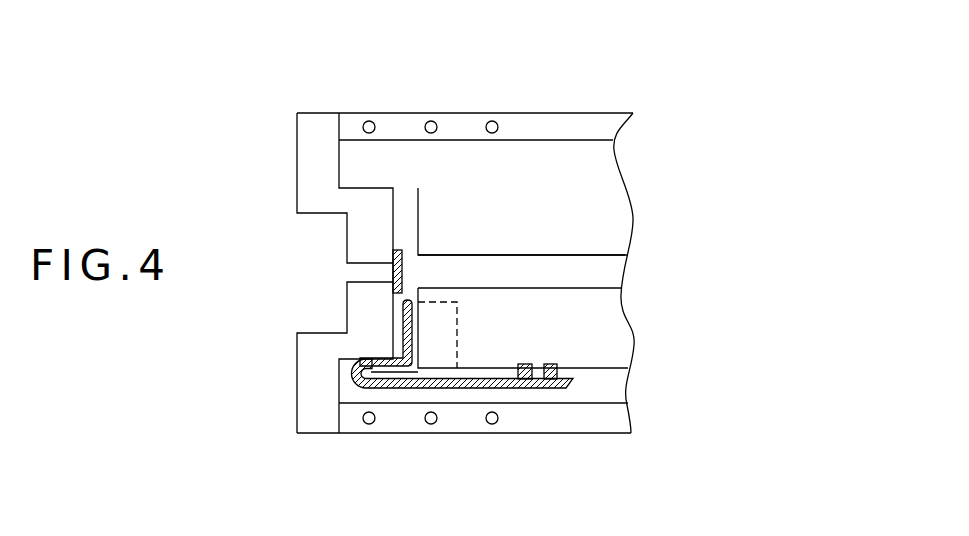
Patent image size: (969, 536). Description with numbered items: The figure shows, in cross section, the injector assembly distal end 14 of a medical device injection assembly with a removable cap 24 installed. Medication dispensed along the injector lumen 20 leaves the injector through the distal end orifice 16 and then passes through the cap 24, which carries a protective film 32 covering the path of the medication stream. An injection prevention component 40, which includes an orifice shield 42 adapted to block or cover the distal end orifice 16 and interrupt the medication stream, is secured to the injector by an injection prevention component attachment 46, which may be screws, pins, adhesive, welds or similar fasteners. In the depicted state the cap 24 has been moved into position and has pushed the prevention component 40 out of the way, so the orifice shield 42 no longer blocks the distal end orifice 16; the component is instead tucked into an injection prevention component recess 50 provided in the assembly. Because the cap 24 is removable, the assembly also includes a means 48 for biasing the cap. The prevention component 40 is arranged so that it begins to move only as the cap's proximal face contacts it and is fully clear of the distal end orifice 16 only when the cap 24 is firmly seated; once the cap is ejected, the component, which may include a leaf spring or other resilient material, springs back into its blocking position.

The injector assembly distal end 14 is at (313, 452).
The distal end orifice 16 is at (427, 273).
The injector lumen 20 is at (568, 273).
The cap 24 is at (313, 401).
The film 32 is at (395, 269).
The injection prevention component 40 is at (408, 388).
The orifice shield 42 is at (407, 316).
The injection prevention component attachment 46 is at (546, 383).
The means for biasing the cap 48 is at (491, 119).
The injection prevention component recess 50 is at (438, 342).